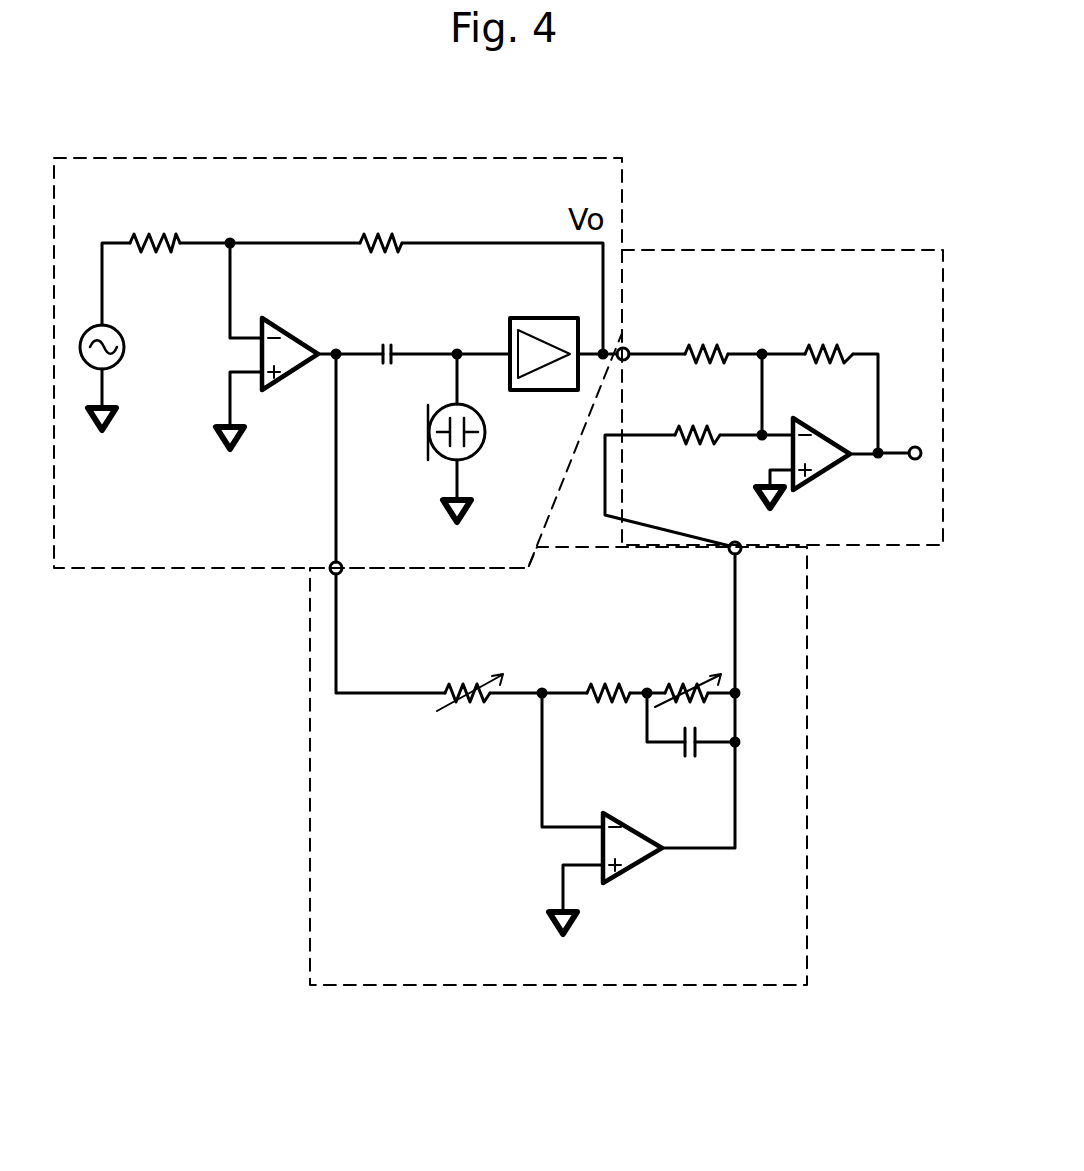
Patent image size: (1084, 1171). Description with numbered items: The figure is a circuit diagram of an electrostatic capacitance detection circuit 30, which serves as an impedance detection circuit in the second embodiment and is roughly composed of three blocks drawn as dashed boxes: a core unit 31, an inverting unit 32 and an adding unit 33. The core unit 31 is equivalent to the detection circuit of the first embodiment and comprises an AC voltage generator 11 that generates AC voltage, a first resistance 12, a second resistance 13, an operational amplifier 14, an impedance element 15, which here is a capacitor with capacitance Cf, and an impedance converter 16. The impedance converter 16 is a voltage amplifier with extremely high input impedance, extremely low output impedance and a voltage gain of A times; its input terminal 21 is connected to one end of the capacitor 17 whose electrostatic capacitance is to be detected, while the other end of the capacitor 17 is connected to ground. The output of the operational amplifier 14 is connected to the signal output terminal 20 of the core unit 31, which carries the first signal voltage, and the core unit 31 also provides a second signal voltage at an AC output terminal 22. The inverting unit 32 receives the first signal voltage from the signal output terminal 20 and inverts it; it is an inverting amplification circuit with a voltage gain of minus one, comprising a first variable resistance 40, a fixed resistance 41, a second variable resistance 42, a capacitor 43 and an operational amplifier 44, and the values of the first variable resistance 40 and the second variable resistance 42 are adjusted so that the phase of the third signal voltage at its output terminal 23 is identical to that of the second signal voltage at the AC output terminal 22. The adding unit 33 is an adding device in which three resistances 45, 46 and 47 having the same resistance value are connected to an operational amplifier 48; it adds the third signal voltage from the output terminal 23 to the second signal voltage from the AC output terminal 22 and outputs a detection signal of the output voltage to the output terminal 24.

The AC voltage generator 11 is at (118, 366).
The resistance (R1) 12 is at (161, 251).
The resistance (R2) 13 is at (366, 252).
The operational amplifier 14 is at (270, 318).
The impedance element 15 is at (383, 366).
The impedance converter 16 is at (538, 318).
The capacitor 17 is at (487, 390).
The signal output terminal 20 is at (330, 562).
The input terminal 21 is at (432, 357).
The AC output terminal 22 is at (628, 360).
The output terminal 23 is at (741, 556).
The output terminal 24 is at (915, 460).
The electrostatic capacitance detection circuit 30 is at (738, 168).
The core unit 31 is at (613, 178).
The inverting unit 32 is at (310, 700).
The adding unit 33 is at (828, 250).
The variable resistance (R4) 40 is at (463, 708).
The resistance (R5) 41 is at (597, 712).
The variable resistance (R6) 42 is at (693, 688).
The capacitor 43 is at (683, 757).
The operational amplifier 44 is at (641, 862).
The resistance (R7) 45 is at (717, 341).
The resistance (R8) 46 is at (698, 447).
The resistance (R9) 47 is at (820, 362).
The operational amplifier 48 is at (857, 418).